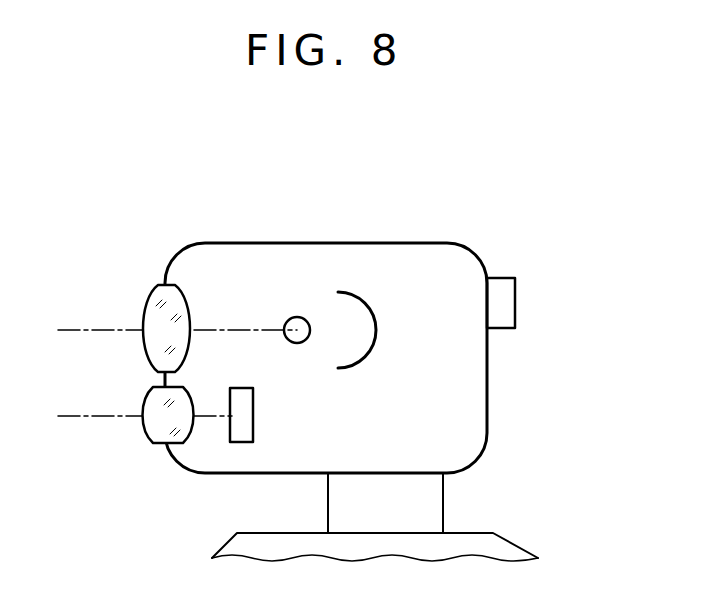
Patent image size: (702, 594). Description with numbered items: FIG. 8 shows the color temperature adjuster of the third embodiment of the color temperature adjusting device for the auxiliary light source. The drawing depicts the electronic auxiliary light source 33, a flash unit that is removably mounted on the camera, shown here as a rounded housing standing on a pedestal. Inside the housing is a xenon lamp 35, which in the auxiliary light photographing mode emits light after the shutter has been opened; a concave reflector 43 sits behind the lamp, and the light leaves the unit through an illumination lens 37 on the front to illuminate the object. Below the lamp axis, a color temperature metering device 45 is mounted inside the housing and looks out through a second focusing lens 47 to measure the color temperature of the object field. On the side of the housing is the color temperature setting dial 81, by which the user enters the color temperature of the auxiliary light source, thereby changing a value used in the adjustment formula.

The electronic auxiliary light source 33 is at (467, 366).
The xenon lamp 35 is at (301, 317).
The illumination lens 37 is at (155, 298).
The reflector 43 is at (364, 299).
The color temperature metering device 45 is at (245, 438).
The focusing lens 47 is at (152, 447).
The color temperature setting dial 81 is at (508, 295).